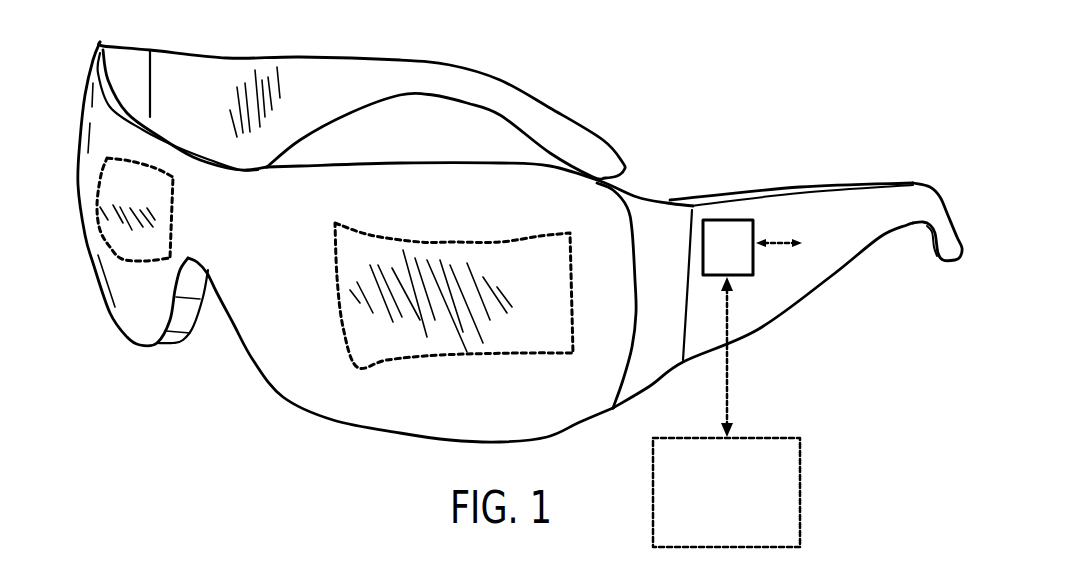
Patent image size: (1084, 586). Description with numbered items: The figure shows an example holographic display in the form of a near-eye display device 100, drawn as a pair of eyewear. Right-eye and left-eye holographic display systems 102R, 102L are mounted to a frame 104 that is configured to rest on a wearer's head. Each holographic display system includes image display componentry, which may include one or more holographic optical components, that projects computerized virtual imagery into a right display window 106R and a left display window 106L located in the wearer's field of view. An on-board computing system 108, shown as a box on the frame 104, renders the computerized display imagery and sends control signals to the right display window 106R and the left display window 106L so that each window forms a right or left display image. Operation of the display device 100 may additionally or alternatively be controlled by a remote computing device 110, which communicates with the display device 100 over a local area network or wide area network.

The near-eye display device 100 is at (560, 42).
The right-eye holographic display system 102R is at (120, 265).
The left-eye holographic display system 102L is at (501, 373).
The frame 104 is at (630, 187).
The right display window 106R is at (157, 200).
The left display window 106L is at (555, 277).
The on-board computing system 108 is at (727, 218).
The remote computing device 110 is at (785, 533).